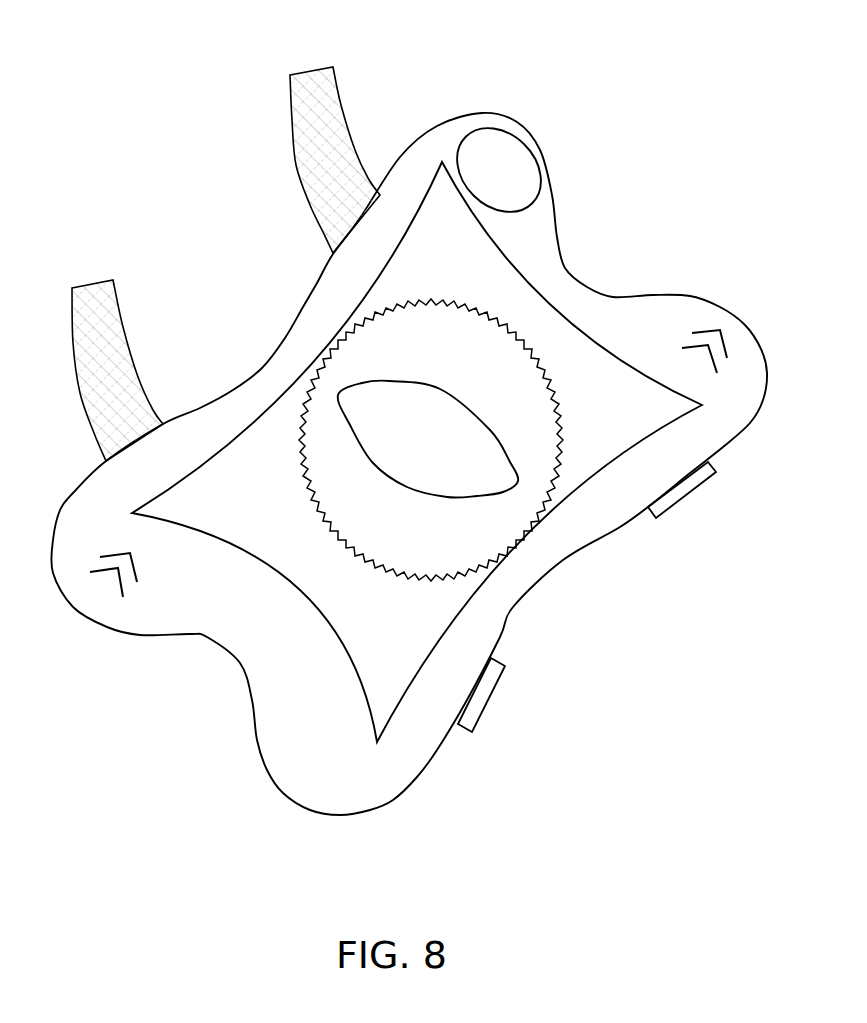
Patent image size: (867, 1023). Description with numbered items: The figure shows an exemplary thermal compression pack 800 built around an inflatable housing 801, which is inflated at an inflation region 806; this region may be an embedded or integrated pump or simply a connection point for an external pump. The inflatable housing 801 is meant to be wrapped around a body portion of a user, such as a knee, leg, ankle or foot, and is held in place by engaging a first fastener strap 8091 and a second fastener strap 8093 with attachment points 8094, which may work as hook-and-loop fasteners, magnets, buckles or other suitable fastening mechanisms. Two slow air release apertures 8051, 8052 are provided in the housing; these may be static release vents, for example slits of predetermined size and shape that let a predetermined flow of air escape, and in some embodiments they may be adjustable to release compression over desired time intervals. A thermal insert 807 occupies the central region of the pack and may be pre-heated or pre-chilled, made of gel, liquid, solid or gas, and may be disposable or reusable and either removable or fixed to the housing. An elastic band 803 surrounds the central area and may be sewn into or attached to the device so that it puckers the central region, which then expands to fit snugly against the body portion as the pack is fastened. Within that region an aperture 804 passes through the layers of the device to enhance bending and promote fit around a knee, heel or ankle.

The thermal compression pack 800 is at (197, 213).
The inflatable housing 801 is at (223, 622).
The elastic band 803 is at (523, 512).
The aperture 804 is at (409, 449).
The inflation region 806 is at (483, 143).
The thermal insert 807 is at (390, 667).
The first slow air release aperture 8051 is at (117, 583).
The second slow air release aperture 8052 is at (712, 332).
The first fastener strap 8091 is at (313, 83).
The second fastener strap 8093 is at (103, 280).
The attachment points 8094 is at (677, 512).